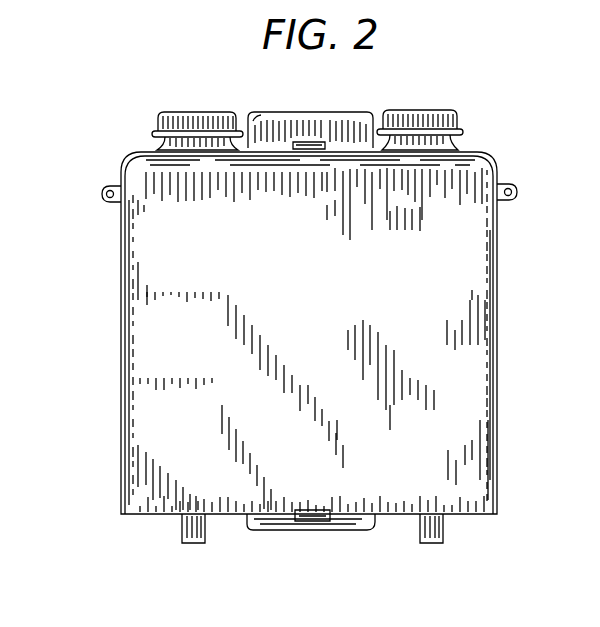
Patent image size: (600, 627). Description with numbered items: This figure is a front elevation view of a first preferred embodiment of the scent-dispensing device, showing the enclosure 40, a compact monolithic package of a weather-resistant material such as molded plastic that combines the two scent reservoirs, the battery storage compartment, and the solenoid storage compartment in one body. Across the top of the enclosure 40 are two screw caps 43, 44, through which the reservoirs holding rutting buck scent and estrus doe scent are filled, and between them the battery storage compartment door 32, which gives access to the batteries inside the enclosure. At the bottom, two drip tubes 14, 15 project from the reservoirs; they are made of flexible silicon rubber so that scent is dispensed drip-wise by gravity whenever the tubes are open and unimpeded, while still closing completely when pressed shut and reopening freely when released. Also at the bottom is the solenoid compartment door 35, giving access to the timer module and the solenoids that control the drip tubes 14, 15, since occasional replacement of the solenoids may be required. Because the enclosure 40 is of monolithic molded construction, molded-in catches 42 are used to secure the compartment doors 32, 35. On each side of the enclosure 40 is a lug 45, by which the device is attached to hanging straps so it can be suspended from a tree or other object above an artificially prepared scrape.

The enclosure 40 is at (122, 328).
The screw cap 43 is at (195, 112).
The screw cap 44 is at (446, 72).
The battery storage compartment door 32 is at (372, 74).
The catch 42 is at (302, 140).
The lug 45 is at (110, 186).
The drip tube 14 is at (182, 536).
The drip tube 15 is at (443, 531).
The solenoid compartment door 35 is at (273, 530).